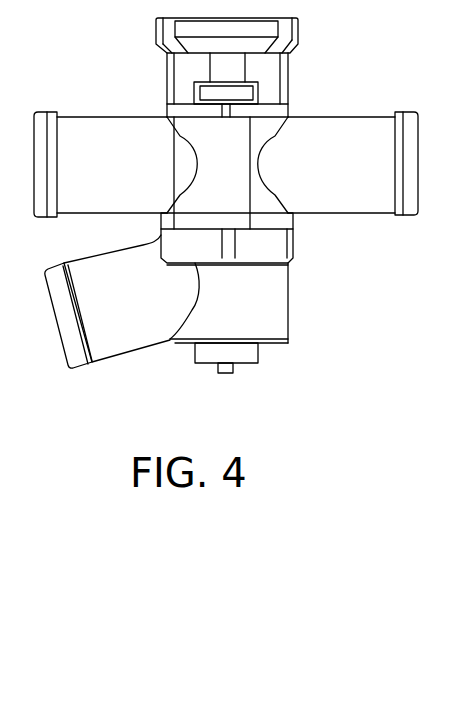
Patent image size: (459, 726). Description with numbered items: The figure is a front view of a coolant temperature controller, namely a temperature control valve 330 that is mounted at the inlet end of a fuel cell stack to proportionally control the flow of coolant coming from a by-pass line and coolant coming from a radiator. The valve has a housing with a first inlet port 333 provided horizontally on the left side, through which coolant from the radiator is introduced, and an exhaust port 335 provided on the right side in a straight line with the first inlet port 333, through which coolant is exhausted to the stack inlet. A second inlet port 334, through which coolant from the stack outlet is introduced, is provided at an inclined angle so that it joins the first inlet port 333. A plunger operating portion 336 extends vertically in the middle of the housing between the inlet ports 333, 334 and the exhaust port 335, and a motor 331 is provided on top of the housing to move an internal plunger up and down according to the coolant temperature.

The temperature control valve 330 is at (116, 74).
The motor 331 is at (232, 70).
The first inlet port 333 is at (77, 117).
The second inlet port 334 is at (112, 343).
The exhaust port 335 is at (378, 125).
The plunger operating portion 336 is at (270, 297).